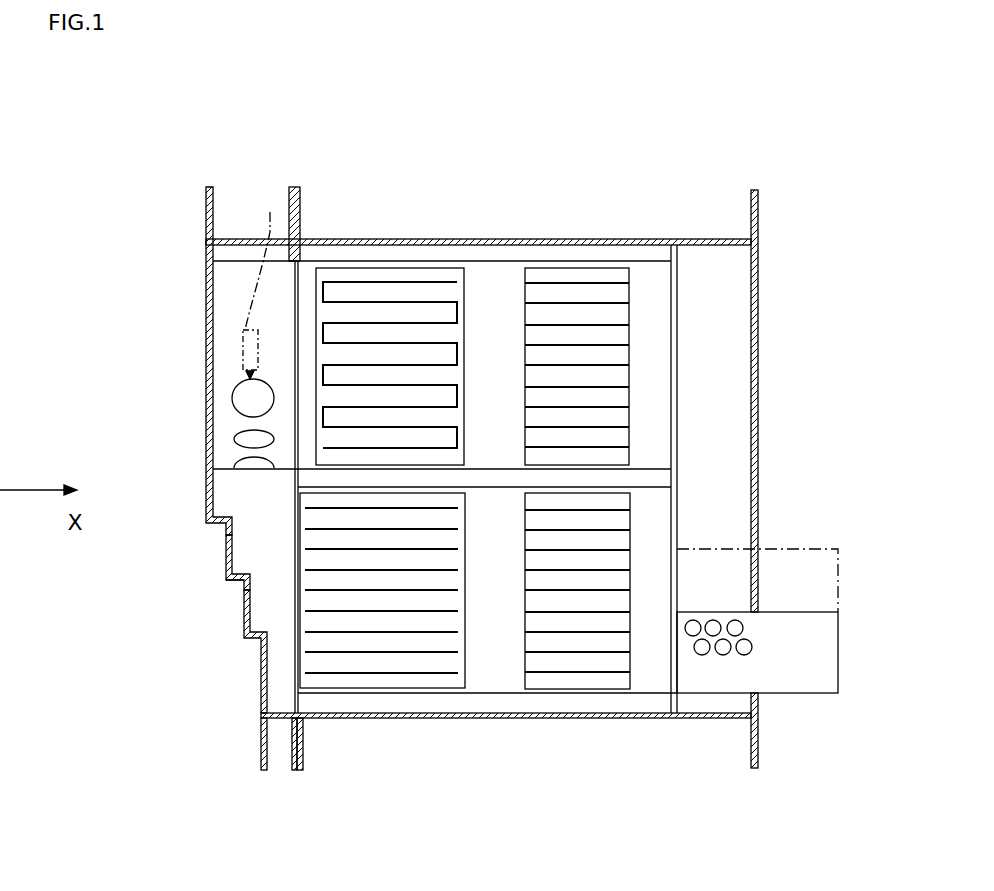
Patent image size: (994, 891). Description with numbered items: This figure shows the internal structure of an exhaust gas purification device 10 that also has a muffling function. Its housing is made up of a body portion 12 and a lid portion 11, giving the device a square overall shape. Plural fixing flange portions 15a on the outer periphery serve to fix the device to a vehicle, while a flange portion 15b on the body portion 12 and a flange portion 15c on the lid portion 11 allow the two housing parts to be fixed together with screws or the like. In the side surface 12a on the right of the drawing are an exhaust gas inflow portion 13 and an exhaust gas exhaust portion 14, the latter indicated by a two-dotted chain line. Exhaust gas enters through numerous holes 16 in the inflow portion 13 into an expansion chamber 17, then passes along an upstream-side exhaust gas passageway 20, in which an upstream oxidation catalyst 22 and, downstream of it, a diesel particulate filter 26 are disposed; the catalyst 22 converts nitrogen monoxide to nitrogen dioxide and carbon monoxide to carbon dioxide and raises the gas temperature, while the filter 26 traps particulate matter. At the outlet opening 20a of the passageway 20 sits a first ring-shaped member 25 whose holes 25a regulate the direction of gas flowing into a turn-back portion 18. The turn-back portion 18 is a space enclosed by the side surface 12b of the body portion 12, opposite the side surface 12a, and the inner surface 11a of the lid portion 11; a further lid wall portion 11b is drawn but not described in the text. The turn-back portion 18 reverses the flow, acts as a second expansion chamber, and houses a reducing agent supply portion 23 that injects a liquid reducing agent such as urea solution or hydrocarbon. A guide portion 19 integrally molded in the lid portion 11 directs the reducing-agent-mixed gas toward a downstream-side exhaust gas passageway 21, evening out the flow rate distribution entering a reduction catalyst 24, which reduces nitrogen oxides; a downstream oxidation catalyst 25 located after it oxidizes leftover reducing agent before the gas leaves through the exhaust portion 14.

The exhaust gas purification device 10 is at (687, 148).
The lid portion 11 is at (207, 280).
The inner surface 11a is at (211, 521).
The second stepped wall portion 11b is at (262, 607).
The body portion 12 is at (380, 242).
The side surface 12a is at (764, 425).
The side surface 12b is at (284, 423).
The exhaust gas inflow portion 13 is at (798, 670).
The exhaust gas exhaust portion 14 is at (805, 545).
The fixing flange portions 15a is at (262, 742).
The flange portion 15b is at (290, 750).
The flange portion 15c is at (300, 752).
The holes 16 is at (728, 660).
The expansion chamber 17 is at (735, 322).
The turn-back portion 18 is at (229, 485).
The guide portion 19 is at (222, 591).
The upstream-side exhaust gas passageway 20 is at (487, 257).
The outlet opening 20a is at (277, 282).
The downstream-side exhaust gas passageway 21 is at (497, 697).
The upstream oxidation catalyst 22 is at (575, 277).
The reducing agent supply portion 23 is at (260, 282).
The reduction catalyst 24 is at (393, 680).
The downstream oxidation catalyst 25 is at (582, 662).
The holes 25a is at (232, 405).
The diesel particulate filter 26 is at (417, 277).